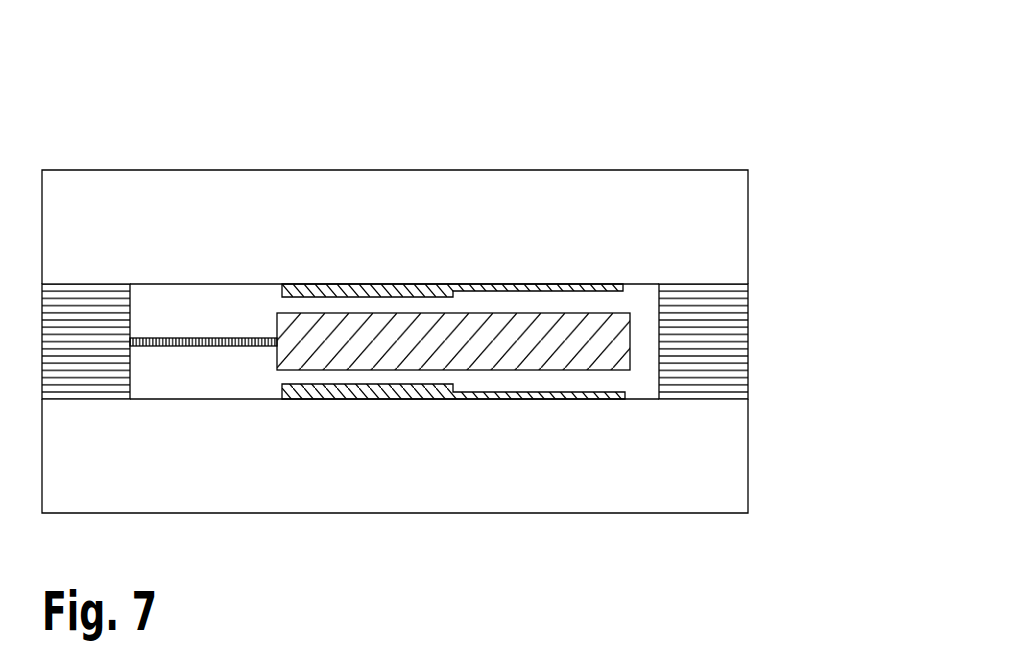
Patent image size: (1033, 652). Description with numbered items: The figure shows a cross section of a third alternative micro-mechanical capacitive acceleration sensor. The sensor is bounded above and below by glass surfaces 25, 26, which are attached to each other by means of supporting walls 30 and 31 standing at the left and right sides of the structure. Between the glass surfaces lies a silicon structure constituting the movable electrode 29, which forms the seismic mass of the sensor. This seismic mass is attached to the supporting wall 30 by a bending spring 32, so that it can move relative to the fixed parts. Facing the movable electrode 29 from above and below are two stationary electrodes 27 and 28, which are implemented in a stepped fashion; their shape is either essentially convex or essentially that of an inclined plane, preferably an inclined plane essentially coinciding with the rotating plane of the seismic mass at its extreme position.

The glass surface 25 is at (748, 223).
The glass surface 26 is at (748, 477).
The stationary electrode 27 is at (398, 284).
The stationary electrode 28 is at (625, 396).
The movable electrode 29 is at (630, 327).
The supporting wall 30 is at (83, 284).
The supporting wall 31 is at (748, 337).
The bending spring 32 is at (202, 338).